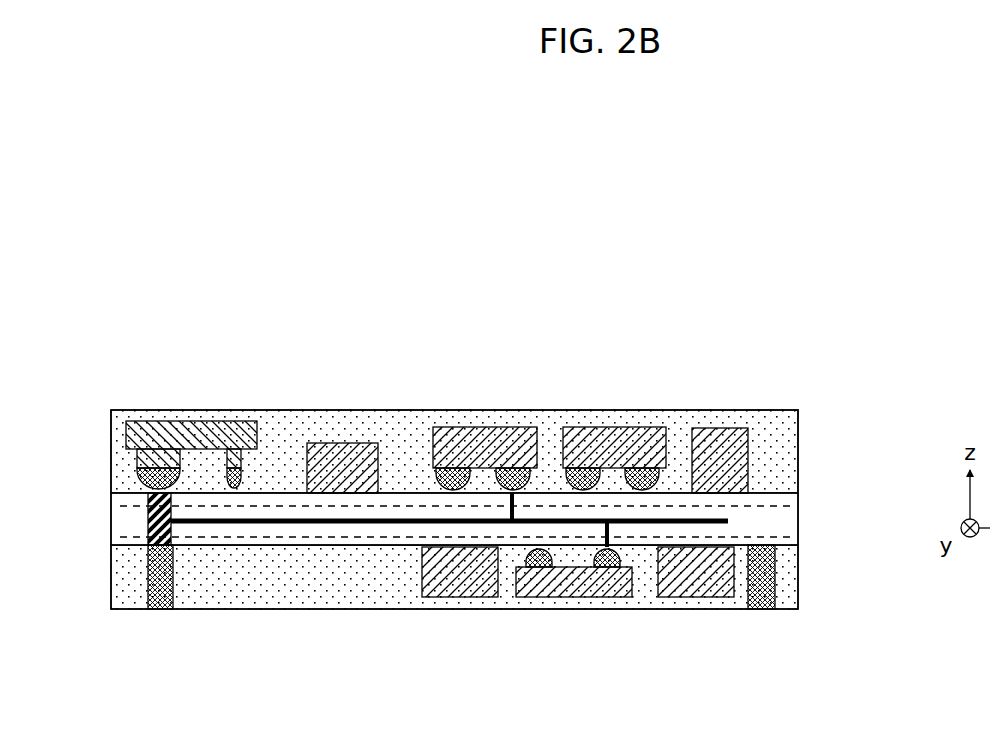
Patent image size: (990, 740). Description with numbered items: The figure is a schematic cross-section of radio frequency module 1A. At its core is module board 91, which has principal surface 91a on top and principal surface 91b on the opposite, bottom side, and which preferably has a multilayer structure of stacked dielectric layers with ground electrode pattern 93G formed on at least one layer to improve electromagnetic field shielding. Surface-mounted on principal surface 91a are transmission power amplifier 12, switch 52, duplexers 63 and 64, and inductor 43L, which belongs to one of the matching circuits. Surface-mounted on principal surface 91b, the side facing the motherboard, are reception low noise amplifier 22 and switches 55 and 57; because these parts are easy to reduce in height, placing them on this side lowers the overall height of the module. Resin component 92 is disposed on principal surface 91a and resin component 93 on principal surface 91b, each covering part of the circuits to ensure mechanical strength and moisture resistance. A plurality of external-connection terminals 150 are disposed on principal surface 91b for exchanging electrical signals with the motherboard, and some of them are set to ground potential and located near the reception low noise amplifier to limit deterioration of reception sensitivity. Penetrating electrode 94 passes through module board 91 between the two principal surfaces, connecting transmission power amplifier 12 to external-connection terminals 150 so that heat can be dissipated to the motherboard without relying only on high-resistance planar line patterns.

The radio frequency module 1A is at (833, 382).
The transmission power amplifier 12 is at (222, 425).
The reception low noise amplifier 22 is at (573, 592).
The inductor 43L is at (720, 445).
The switch 52 is at (338, 443).
The switch 55 is at (463, 590).
The switch 57 is at (700, 590).
The duplexer 63 is at (484, 427).
The duplexer 64 is at (615, 427).
The module board 91 is at (793, 526).
The principal surface 91a is at (789, 488).
The principal surface 91b is at (791, 550).
The resin component 92 is at (793, 436).
The resin component 93 is at (795, 592).
The ground electrode pattern 93G is at (276, 523).
The penetrating electrode 94 is at (147, 512).
The external-connection terminal 150 is at (160, 600).